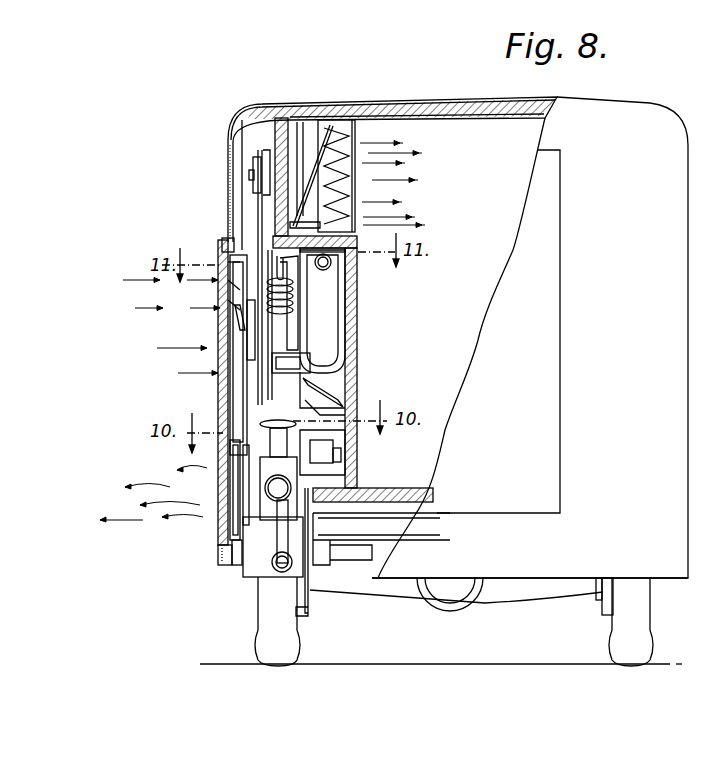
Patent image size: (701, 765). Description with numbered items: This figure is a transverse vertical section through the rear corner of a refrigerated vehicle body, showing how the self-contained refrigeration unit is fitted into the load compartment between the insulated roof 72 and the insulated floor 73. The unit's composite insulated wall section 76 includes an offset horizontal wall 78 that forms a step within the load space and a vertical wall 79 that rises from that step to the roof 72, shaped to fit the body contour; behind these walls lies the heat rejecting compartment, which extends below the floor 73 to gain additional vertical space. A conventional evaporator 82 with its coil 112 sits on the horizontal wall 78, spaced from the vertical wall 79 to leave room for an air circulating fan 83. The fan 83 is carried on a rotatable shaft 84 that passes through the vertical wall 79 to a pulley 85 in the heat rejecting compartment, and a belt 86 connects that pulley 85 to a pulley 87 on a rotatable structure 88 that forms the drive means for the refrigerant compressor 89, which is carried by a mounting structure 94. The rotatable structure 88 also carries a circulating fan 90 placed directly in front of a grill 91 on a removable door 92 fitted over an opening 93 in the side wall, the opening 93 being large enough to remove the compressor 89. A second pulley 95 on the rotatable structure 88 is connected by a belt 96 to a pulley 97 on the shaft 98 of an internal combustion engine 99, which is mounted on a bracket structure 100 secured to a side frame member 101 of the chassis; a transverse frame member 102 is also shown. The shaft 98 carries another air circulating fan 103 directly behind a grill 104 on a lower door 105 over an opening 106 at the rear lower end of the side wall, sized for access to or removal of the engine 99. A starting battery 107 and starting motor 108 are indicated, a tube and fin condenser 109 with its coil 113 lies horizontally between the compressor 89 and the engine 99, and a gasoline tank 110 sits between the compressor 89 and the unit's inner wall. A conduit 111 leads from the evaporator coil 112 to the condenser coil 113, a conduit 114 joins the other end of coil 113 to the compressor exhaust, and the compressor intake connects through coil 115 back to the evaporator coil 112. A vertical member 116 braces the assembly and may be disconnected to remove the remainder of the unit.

The roof 72 is at (431, 96).
The floor 73 is at (420, 515).
The composite insulated wall section 76 is at (357, 298).
The offset horizontal wall 78 is at (322, 277).
The vertical wall 79 is at (238, 121).
The evaporator 82 is at (364, 146).
The air circulating fan 83 is at (303, 124).
The rotatable shaft 84 is at (264, 158).
The pulley 85 is at (253, 167).
The belt 86 is at (257, 205).
The pulley 87 is at (252, 332).
The rotatable structure 88 is at (230, 320).
The refrigerant compressor 89 is at (278, 322).
The circulating fan 90 is at (222, 285).
The grill 91 is at (220, 265).
The door 92 is at (220, 242).
The opening 93 is at (218, 372).
The mounting structure 94 is at (255, 394).
The second pulley 95 is at (223, 300).
The belt 96 is at (250, 450).
The pulley 97 is at (238, 500).
The shaft 98 is at (247, 472).
The internal combustion engine 99 is at (358, 472).
The bracket structure 100 is at (263, 523).
The side frame member 101 is at (310, 560).
The transverse frame member 102 is at (353, 537).
The air circulating fan 103 is at (233, 527).
The grill 104 is at (222, 443).
The door 105 is at (222, 558).
The opening 106 is at (226, 562).
The starting battery 107 is at (341, 458).
The starting motor 108 is at (323, 440).
The condenser 109 is at (340, 395).
The gasoline tank 110 is at (332, 328).
The conduit 111 is at (300, 175).
The coil 112 is at (325, 133).
The coil 113 is at (357, 397).
The conduit 114 is at (300, 357).
The coil 115 is at (348, 257).
The vertical member 116 is at (306, 527).